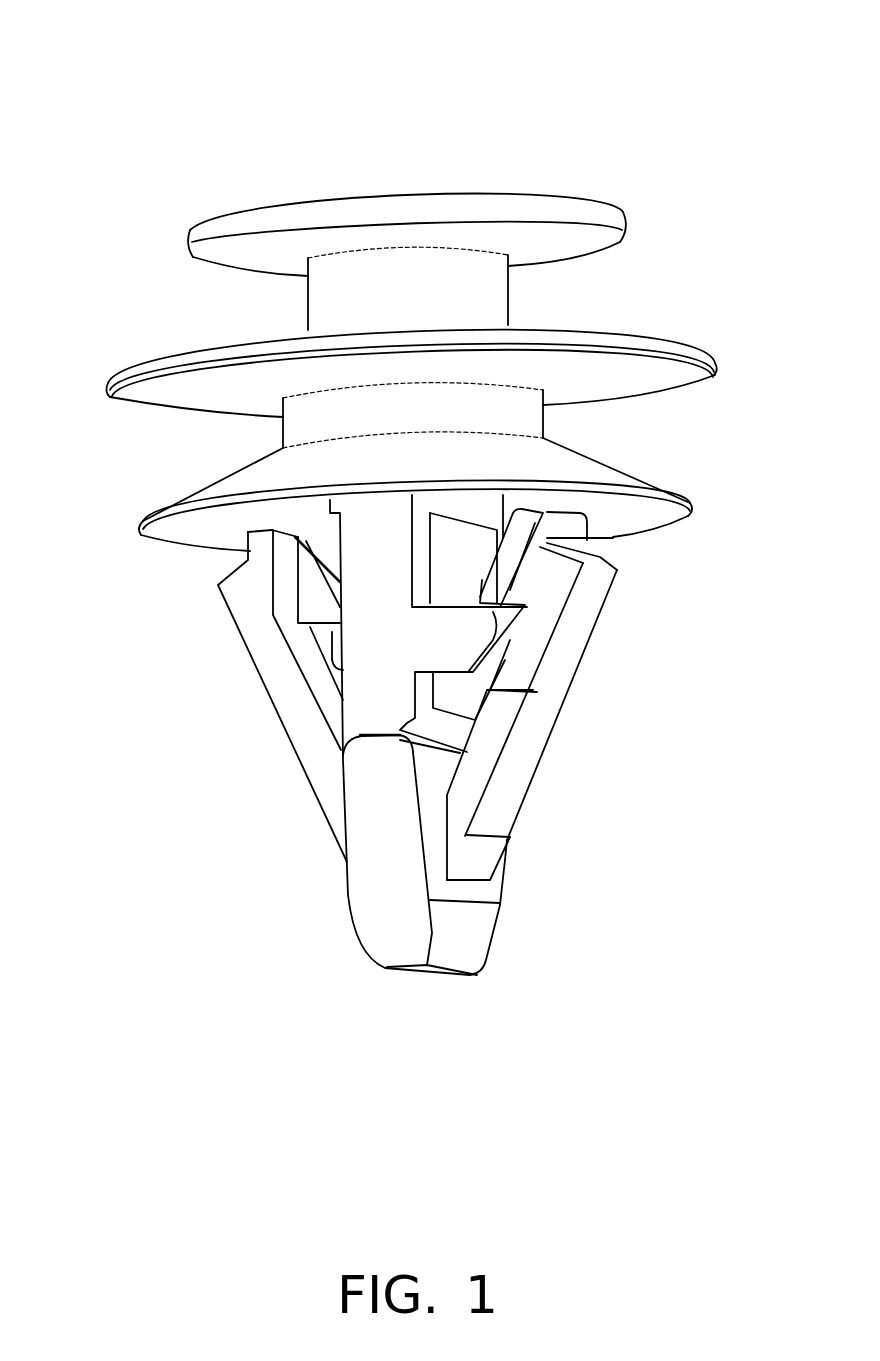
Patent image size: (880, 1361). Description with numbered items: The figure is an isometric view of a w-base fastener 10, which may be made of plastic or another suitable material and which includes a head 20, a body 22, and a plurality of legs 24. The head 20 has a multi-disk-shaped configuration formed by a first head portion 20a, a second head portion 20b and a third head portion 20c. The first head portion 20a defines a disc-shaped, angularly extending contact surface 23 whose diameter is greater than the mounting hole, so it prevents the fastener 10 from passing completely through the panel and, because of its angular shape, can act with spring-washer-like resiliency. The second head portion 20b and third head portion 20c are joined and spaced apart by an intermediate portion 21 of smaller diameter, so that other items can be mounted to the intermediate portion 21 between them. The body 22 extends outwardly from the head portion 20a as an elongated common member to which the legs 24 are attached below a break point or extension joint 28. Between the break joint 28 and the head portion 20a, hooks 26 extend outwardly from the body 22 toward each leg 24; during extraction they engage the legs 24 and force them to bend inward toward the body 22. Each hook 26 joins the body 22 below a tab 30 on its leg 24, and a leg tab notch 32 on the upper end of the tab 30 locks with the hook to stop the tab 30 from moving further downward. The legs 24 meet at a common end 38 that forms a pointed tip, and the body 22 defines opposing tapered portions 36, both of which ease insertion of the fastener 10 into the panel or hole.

The w-base fastener 10 is at (660, 143).
The head 20 is at (305, 216).
The first head portion 20a is at (200, 493).
The second head portion 20b is at (155, 361).
The third head portion 20c is at (208, 226).
The intermediate portion 21 is at (497, 297).
The body 22 is at (355, 583).
The contact surface 23 is at (653, 512).
The legs 24 is at (264, 669).
The hooks 26 is at (500, 648).
The break point or extension joint 28 is at (352, 729).
The tab 30 is at (512, 565).
The leg tab notch 32 is at (613, 537).
The tapered portions 36 is at (472, 945).
The common end 38 is at (397, 947).